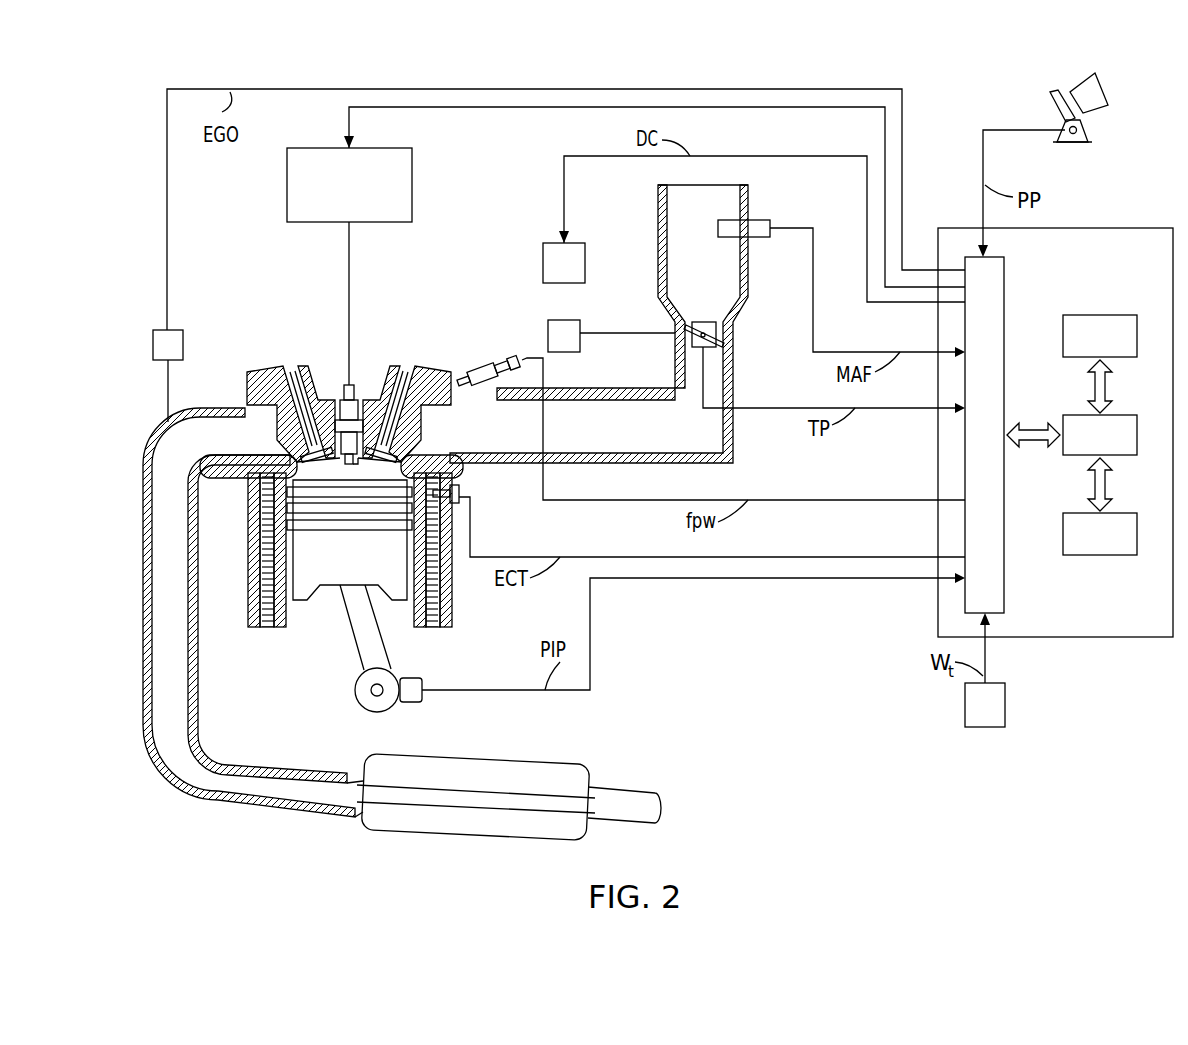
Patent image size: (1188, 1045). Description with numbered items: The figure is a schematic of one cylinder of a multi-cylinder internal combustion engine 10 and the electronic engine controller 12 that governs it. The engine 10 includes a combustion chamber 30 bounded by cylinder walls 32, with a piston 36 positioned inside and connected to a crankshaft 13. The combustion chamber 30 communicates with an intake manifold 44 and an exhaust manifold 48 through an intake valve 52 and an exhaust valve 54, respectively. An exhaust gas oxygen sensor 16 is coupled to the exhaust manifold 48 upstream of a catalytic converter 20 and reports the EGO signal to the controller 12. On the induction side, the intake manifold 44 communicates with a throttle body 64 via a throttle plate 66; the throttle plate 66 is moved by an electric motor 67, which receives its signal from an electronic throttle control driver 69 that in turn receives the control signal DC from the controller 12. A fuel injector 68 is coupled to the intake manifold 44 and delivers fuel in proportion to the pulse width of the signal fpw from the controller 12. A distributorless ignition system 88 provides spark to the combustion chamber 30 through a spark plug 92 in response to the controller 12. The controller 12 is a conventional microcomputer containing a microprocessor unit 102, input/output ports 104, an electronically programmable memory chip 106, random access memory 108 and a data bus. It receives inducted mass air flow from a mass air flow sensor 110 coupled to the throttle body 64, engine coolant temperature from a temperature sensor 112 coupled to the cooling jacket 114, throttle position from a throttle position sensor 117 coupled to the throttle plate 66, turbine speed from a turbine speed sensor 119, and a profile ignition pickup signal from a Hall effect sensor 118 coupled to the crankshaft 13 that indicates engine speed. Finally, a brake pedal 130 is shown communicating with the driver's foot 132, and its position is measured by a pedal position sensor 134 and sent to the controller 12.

The internal combustion engine 10 is at (297, 688).
The electronic engine controller 12 is at (1140, 228).
The crankshaft 13 is at (385, 706).
The exhaust gas oxygen sensor 16 is at (153, 345).
The catalytic converter 20 is at (543, 757).
The combustion chamber 30 is at (333, 482).
The cylinder walls 32 is at (287, 620).
The piston 36 is at (392, 587).
The intake manifold 44 is at (651, 435).
The exhaust manifold 48 is at (146, 490).
The intake valve 52 is at (398, 450).
The exhaust valve 54 is at (302, 450).
The throttle body 64 is at (673, 212).
The throttle plate 66 is at (691, 324).
The electric motor 67 is at (547, 330).
The fuel injector 68 is at (488, 376).
The electronic throttle control (ETC) driver 69 is at (553, 243).
The distributorless ignition system 88 is at (412, 185).
The spark plug 92 is at (352, 390).
The microprocessor unit 102 is at (1132, 414).
The input/output ports 104 is at (1004, 270).
The electronic memory chip 106 is at (1110, 315).
The random access memory 108 is at (1132, 512).
The mass air flow sensor 110 is at (757, 220).
The temperature sensor 112 is at (460, 496).
The cooling jacket 114 is at (451, 612).
The throttle position sensor 117 is at (706, 322).
The Hall effect sensor 118 is at (422, 680).
The turbine speed sensor 119 is at (1005, 705).
The brake pedal 130 is at (1052, 100).
The driver's foot 132 is at (1098, 93).
The pedal position sensor 134 is at (1088, 135).